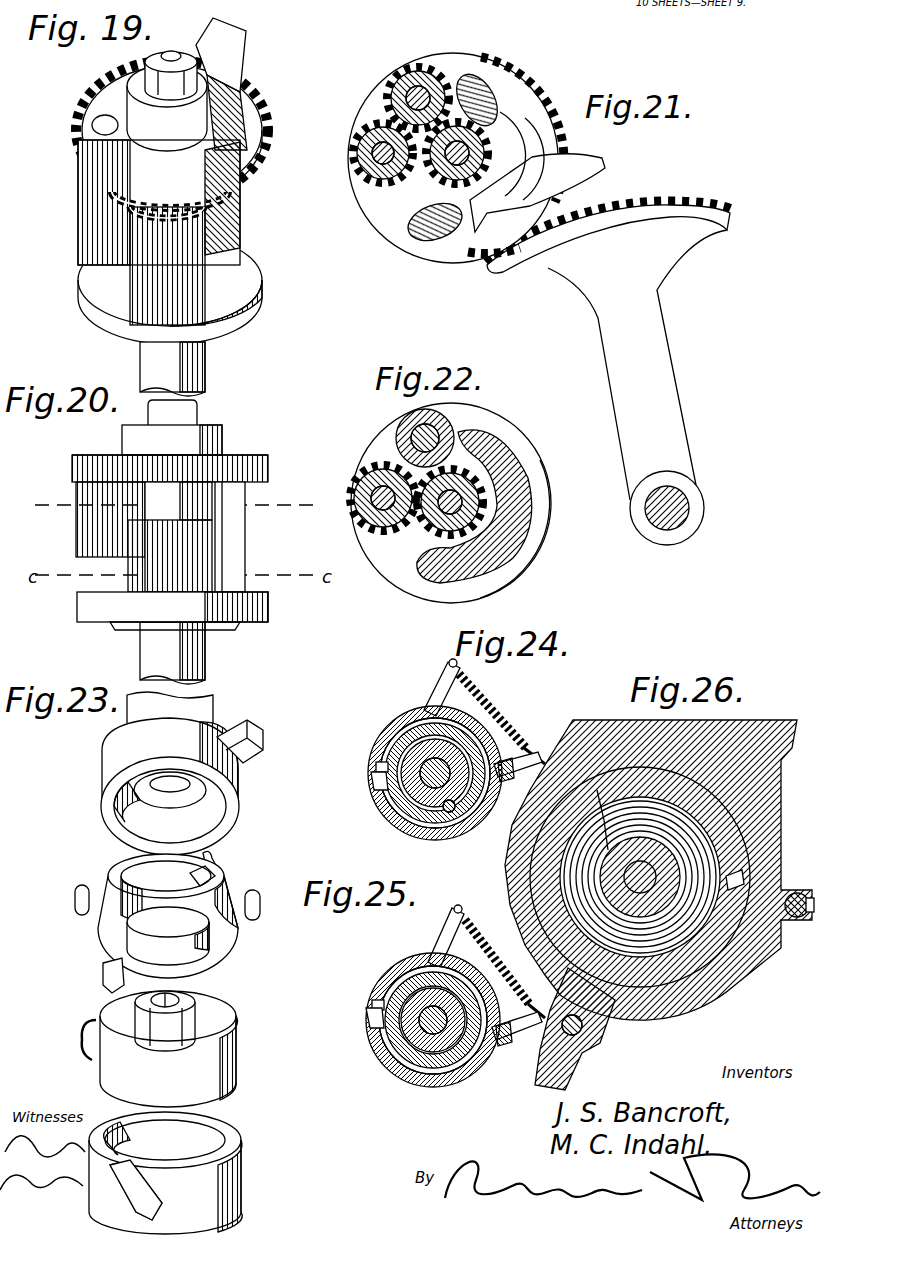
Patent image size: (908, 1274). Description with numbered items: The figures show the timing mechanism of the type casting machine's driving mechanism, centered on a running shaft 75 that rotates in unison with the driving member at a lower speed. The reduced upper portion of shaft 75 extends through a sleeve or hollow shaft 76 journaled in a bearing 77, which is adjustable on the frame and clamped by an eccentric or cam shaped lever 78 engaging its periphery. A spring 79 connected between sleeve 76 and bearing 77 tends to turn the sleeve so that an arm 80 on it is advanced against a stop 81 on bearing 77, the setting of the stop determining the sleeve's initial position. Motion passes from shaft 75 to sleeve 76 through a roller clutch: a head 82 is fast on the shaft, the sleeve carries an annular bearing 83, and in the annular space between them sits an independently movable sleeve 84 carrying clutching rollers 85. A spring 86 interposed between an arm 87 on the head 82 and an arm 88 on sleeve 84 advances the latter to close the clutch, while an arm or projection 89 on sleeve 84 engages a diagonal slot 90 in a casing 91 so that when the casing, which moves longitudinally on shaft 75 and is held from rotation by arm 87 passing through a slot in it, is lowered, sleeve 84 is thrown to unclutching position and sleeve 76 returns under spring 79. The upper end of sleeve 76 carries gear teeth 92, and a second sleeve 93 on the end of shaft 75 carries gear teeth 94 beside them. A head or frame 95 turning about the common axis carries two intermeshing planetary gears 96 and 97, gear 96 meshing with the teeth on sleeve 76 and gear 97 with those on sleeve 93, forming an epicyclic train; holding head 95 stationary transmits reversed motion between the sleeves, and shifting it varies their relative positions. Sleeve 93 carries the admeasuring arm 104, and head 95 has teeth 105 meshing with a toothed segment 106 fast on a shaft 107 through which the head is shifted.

In FIG. 19, the running shaft 75 is at (162, 60).
In FIG. 20, the running shaft 75 is at (190, 677).
In FIG. 21, the running shaft 75 is at (438, 182).
In FIG. 22, the running shaft 75 is at (425, 533).
In FIG. 24, the running shaft 75 is at (402, 790).
In FIG. 25, the running shaft 75 is at (400, 1062).
In FIG. 26, the running shaft 75 is at (641, 830).
In FIG. 22, the sleeve or hollow shaft 76 is at (500, 456).
In FIG. 26, the sleeve or hollow shaft 76 is at (690, 1008).
In FIG. 26, the bearing 77 is at (716, 940).
In FIG. 26, the eccentric or cam shaped lever 78 is at (596, 1046).
In FIG. 26, the spring 79 is at (598, 790).
In FIG. 23, the arm 80 is at (265, 746).
In FIG. 26, the arm 80 is at (742, 882).
In FIG. 26, the stop 81 is at (720, 850).
In FIG. 23, the head 82 is at (236, 1050).
In FIG. 24, the head 82 is at (408, 758).
In FIG. 25, the head 82 is at (382, 1035).
In FIG. 23, the annular bearing 83 is at (238, 810).
In FIG. 24, the annular bearing 83 is at (398, 740).
In FIG. 23, the independently movable sleeve 84 is at (240, 945).
In FIG. 24, the independently movable sleeve 84 is at (412, 718).
In FIG. 25, the independently movable sleeve 84 is at (398, 968).
In FIG. 23, the clutching rollers 85 is at (260, 898).
In FIG. 24, the clutching rollers 85 is at (452, 814).
In FIG. 24, the spring 86 is at (502, 719).
In FIG. 25, the spring 86 is at (505, 964).
In FIG. 23, the arm 87 is at (80, 1036).
In FIG. 24, the arm 87 is at (440, 678).
In FIG. 25, the arm 87 is at (442, 938).
In FIG. 23, the arm 88 is at (220, 866).
In FIG. 24, the arm 88 is at (510, 786).
In FIG. 25, the arm 88 is at (506, 1044).
In FIG. 23, the arm or projection 89 is at (104, 968).
In FIG. 24, the arm or projection 89 is at (373, 786).
In FIG. 25, the arm or projection 89 is at (368, 1012).
In FIG. 24, the diagonal slot 90 is at (376, 770).
In FIG. 25, the diagonal slot 90 is at (372, 990).
In FIG. 23, the casing 91 is at (242, 1180).
In FIG. 24, the casing 91 is at (410, 838).
In FIG. 25, the casing 91 is at (437, 1090).
In FIG. 19, the gear teeth 92 is at (240, 232).
In FIG. 20, the gear teeth 92 is at (172, 611).
In FIG. 22, the gear teeth 92 is at (512, 486).
In FIG. 21, the second sleeve 93 is at (432, 235).
In FIG. 21, the gear teeth 94 is at (482, 140).
In FIG. 19, the head or frame 95 is at (228, 207).
In FIG. 20, the head or frame 95 is at (246, 540).
In FIG. 21, the head or frame 95 is at (530, 136).
In FIG. 22, the head or frame 95 is at (515, 540).
In FIG. 19, the planetary gear 96 is at (150, 300).
In FIG. 20, the planetary gear 96 is at (160, 580).
In FIG. 21, the planetary gear 96 is at (378, 172).
In FIG. 22, the planetary gear 96 is at (350, 490).
In FIG. 19, the planetary gear 97 is at (80, 210).
In FIG. 20, the planetary gear 97 is at (110, 519).
In FIG. 21, the planetary gear 97 is at (452, 63).
In FIG. 19, the admeasuring arm 104 is at (236, 37).
In FIG. 21, the admeasuring arm 104 is at (537, 172).
In FIG. 19, the teeth 105 is at (270, 108).
In FIG. 20, the teeth 105 is at (170, 453).
In FIG. 21, the teeth 105 is at (498, 80).
In FIG. 21, the toothed segment 106 is at (608, 373).
In FIG. 21, the shaft 107 is at (690, 508).